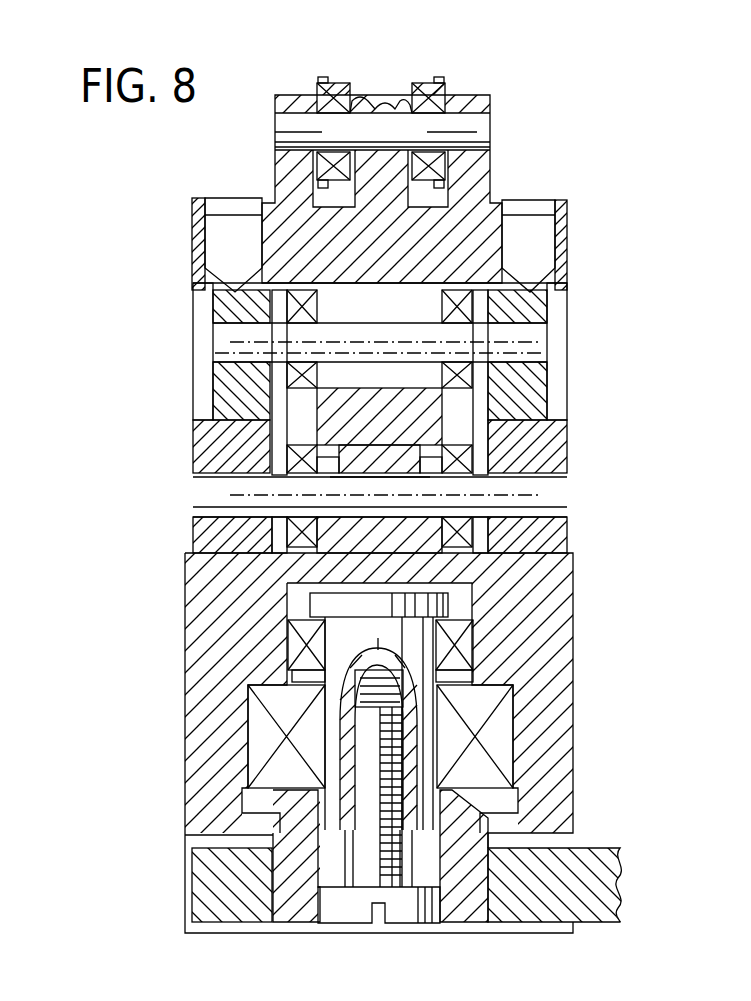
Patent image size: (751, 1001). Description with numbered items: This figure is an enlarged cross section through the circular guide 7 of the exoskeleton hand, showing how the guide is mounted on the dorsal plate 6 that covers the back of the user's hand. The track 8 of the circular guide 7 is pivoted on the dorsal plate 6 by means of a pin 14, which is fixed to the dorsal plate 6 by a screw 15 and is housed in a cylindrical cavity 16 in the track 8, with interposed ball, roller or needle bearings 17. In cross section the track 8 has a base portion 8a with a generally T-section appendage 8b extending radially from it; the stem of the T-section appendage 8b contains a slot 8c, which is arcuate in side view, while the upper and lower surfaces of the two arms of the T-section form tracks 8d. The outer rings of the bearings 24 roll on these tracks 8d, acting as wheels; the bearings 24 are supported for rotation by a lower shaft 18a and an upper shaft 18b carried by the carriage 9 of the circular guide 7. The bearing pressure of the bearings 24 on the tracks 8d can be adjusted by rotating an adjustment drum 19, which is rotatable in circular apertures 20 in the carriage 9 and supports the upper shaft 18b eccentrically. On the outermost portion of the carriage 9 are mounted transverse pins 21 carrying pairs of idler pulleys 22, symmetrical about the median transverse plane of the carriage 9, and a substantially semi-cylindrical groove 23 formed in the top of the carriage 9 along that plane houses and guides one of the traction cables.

The dorsal plate 6 is at (610, 873).
The circular guide 7 is at (598, 184).
The track 8 is at (580, 774).
The base portion 8a is at (560, 597).
The T-section appendage 8b is at (390, 402).
The slot 8c is at (357, 478).
The tracks 8d is at (270, 385).
The carriage 9 is at (280, 176).
The pin 14 is at (423, 647).
The screw 15 is at (365, 760).
The cylindrical cavity 16 is at (300, 597).
The bearings 17 is at (292, 645).
The lower shaft 18a is at (535, 488).
The upper shaft 18b is at (533, 347).
The adjustment drum 19 is at (212, 296).
The circular apertures 20 is at (560, 298).
The transverse pins 21 is at (477, 134).
The idler pulleys 22 is at (317, 90).
The semi-cylindrical groove 23 is at (393, 95).
The bearings 24 is at (300, 293).